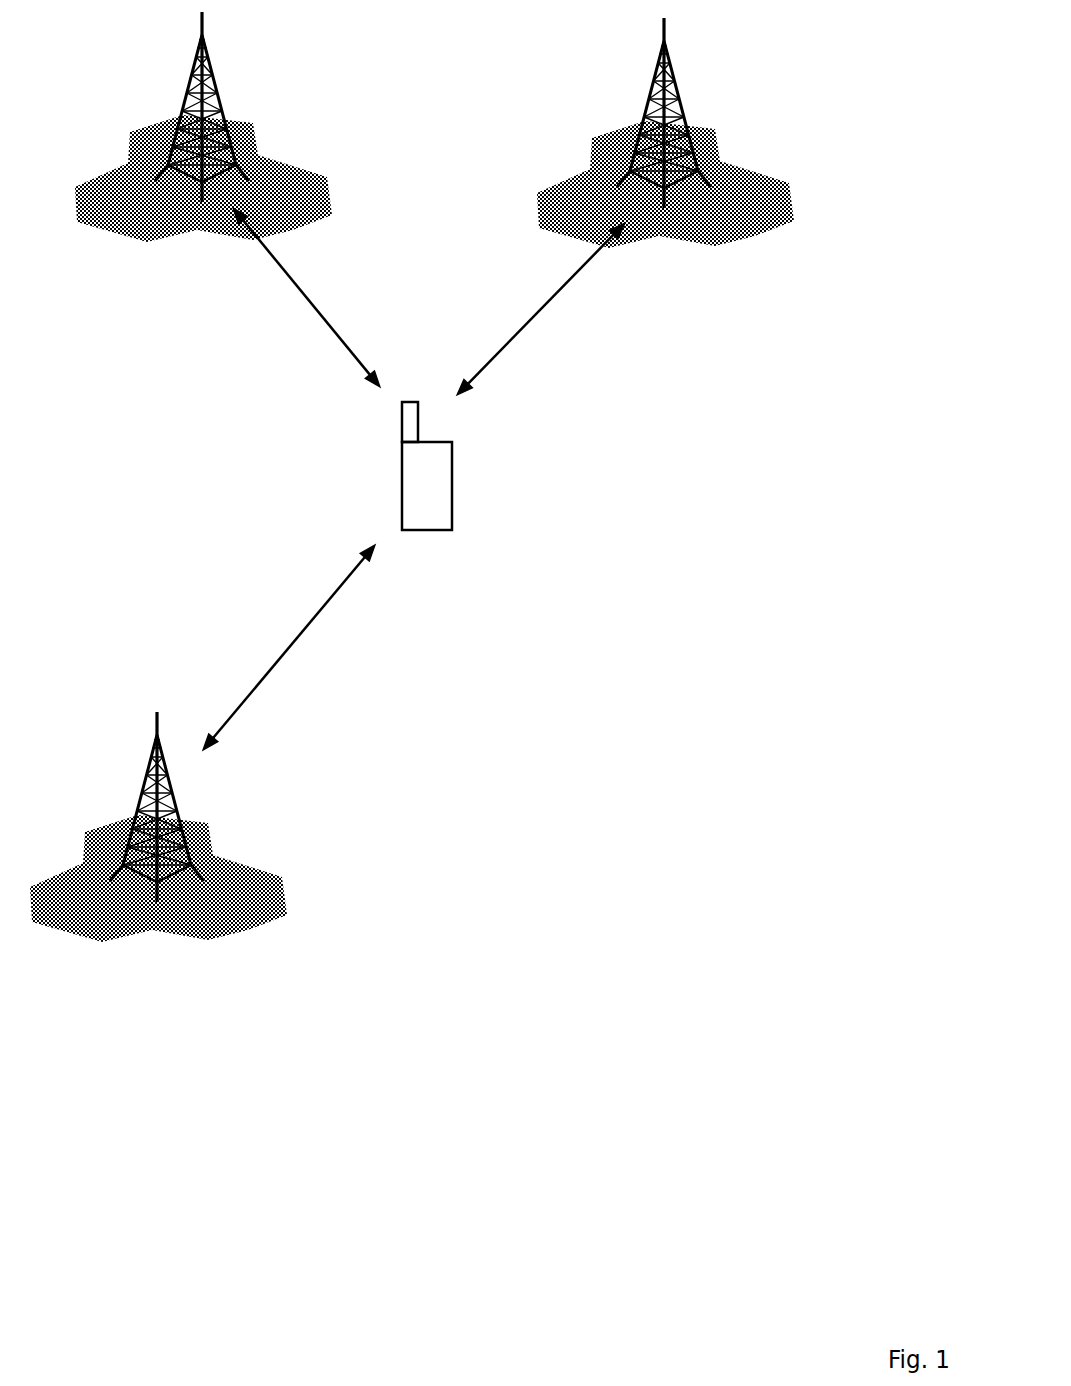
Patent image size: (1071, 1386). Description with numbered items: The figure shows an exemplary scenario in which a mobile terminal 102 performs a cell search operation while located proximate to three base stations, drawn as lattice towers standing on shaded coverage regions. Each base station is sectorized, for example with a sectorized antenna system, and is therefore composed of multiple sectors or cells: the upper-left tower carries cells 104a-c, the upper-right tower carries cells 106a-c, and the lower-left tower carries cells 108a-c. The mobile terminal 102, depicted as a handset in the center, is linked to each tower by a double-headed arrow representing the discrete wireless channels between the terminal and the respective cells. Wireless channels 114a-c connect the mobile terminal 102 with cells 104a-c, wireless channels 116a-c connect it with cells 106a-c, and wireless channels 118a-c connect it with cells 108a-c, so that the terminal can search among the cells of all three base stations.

The mobile terminal 102 is at (420, 477).
The cells of base station 104 104a-c is at (176, 134).
The cells of base station 106 106a-c is at (698, 164).
The cells of base station 108 108a-c is at (190, 860).
The wireless channels 114a-c is at (306, 297).
The wireless channels 116a-c is at (541, 309).
The wireless channels 118a-c is at (289, 647).